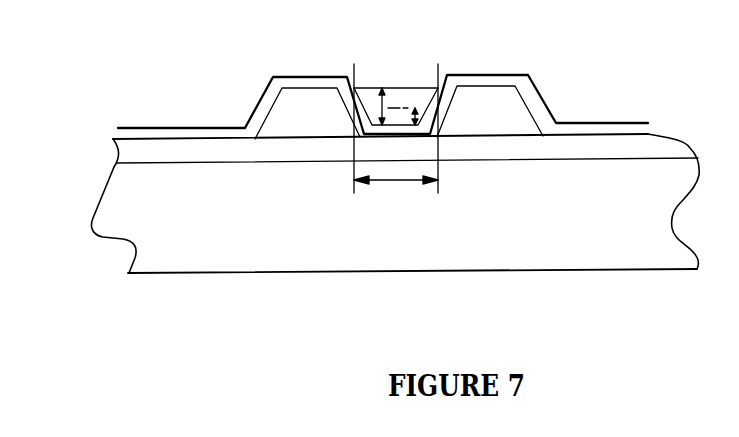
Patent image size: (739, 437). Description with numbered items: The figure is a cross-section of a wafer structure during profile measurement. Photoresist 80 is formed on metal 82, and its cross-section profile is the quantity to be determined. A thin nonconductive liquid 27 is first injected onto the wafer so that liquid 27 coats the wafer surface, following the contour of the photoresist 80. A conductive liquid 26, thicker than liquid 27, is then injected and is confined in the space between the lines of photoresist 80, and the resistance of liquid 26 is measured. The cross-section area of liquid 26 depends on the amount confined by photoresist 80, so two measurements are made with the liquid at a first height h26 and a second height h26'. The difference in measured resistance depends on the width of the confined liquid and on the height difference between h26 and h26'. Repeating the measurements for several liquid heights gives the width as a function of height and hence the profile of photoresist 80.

The thin nonconductive liquid 27 is at (180, 133).
The conductive liquid 26 is at (405, 88).
The photoresist 80 is at (300, 122).
The metal 82 is at (615, 148).
The height of liquid 26 during first measurement h26 is at (373, 70).
The height of liquid 26 during second measurement h26' is at (451, 77).